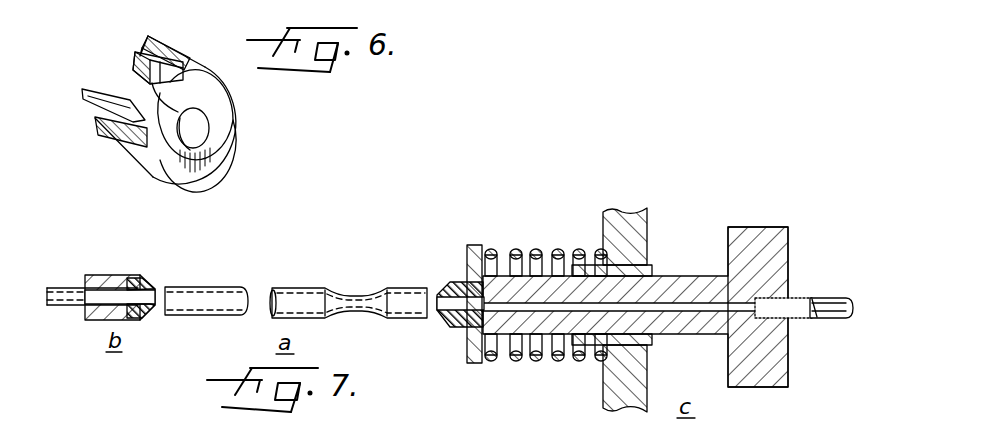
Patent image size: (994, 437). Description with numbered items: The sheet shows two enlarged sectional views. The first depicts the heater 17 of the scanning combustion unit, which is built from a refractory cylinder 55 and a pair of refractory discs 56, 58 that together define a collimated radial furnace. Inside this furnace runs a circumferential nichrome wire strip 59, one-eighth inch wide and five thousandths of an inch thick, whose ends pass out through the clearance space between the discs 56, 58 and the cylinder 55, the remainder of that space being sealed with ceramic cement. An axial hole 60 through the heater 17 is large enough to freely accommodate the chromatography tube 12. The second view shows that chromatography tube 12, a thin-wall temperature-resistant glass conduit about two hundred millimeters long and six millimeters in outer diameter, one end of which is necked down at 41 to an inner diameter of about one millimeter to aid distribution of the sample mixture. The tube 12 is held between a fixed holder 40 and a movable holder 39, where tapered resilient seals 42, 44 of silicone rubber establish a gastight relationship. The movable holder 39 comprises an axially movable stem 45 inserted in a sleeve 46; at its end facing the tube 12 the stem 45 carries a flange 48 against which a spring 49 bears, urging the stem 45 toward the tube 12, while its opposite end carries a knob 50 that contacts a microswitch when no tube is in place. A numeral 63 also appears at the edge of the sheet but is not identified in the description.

In FIG. 6, the heater 17 is at (155, 110).
In FIG. 6, the refractory cylinder 55 is at (180, 40).
In FIG. 6, the refractory disc 56 is at (230, 103).
In FIG. 6, the refractory disc 58 is at (137, 78).
In FIG. 6, the nichrome wire strip 59 is at (83, 97).
In FIG. 6, the axial hole 60 is at (198, 127).
In FIG. 7, the fixed holder 40 is at (114, 279).
In FIG. 7, the tapered resilient seal 42 is at (143, 283).
In FIG. 7, the chromatography tube 12 is at (347, 275).
In FIG. 7, the necked-down portion 41 is at (365, 297).
In FIG. 7, the tapered resilient seal 44 is at (445, 292).
In FIG. 7, the flange 48 is at (485, 222).
In FIG. 7, the spring 49 is at (557, 220).
In FIG. 7, the movable holder 39 is at (652, 214).
In FIG. 7, the stem 45 is at (668, 307).
In FIG. 7, the knob 50 is at (787, 270).
In FIG. 7, the sleeve 46 is at (647, 342).
In FIG. 7, the element 63 is at (428, 427).